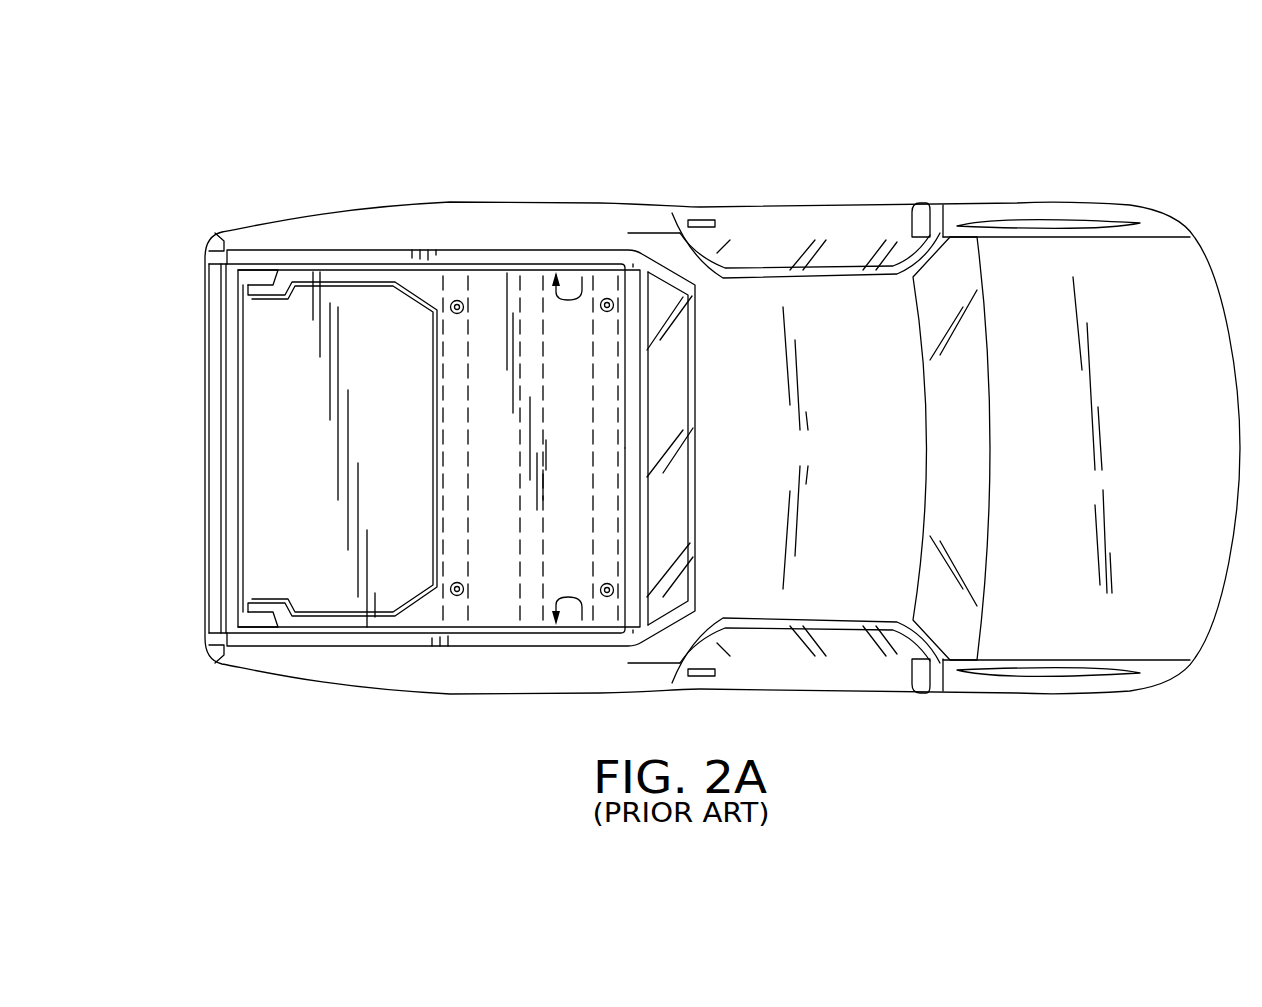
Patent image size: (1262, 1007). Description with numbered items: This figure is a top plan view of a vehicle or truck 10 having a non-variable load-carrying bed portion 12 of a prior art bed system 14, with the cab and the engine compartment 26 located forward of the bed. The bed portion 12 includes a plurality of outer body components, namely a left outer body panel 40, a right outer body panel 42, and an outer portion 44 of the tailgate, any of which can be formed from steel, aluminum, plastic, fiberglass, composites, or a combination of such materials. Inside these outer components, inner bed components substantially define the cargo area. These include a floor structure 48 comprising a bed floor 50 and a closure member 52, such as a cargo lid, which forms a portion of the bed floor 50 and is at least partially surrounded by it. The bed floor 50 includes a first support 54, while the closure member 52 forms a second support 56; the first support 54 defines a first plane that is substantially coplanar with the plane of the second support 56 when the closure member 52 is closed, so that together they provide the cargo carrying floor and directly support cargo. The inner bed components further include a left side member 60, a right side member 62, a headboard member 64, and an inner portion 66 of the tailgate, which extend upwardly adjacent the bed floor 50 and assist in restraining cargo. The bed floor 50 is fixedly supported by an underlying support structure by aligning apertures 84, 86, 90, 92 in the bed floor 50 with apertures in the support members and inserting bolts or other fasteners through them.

The truck 10 is at (800, 138).
The bed portion 12 is at (433, 191).
The prior art bed system 14 is at (251, 340).
The engine compartment 26 is at (1228, 247).
The left outer body panel 40 is at (505, 215).
The right outer body panel 42 is at (418, 680).
The outer portion of the tailgate 44 is at (215, 475).
The floor structure 48 is at (370, 307).
The bed floor 50 is at (500, 611).
The closure member 52 is at (328, 592).
The first support 54 is at (478, 460).
The second support 56 is at (268, 460).
The left side member 60 is at (582, 277).
The right side member 62 is at (582, 620).
The headboard member 64 is at (637, 523).
The inner portion of the tailgate 66 is at (228, 518).
The aperture 84 is at (614, 306).
The aperture 86 is at (449, 312).
The aperture 90 is at (607, 598).
The aperture 92 is at (450, 584).